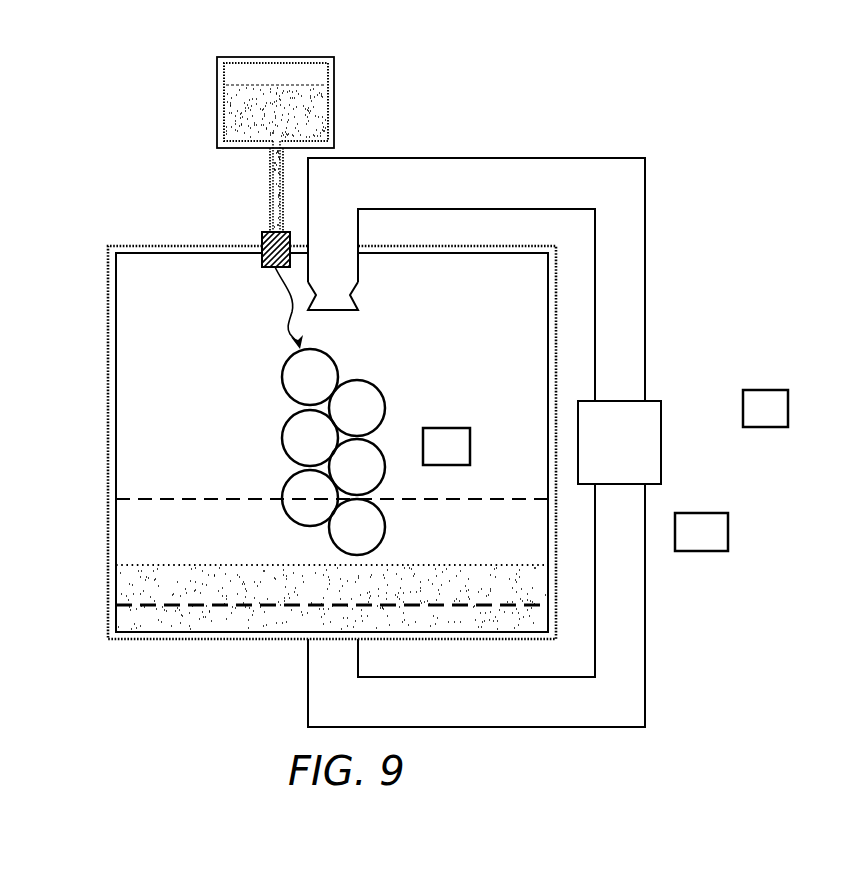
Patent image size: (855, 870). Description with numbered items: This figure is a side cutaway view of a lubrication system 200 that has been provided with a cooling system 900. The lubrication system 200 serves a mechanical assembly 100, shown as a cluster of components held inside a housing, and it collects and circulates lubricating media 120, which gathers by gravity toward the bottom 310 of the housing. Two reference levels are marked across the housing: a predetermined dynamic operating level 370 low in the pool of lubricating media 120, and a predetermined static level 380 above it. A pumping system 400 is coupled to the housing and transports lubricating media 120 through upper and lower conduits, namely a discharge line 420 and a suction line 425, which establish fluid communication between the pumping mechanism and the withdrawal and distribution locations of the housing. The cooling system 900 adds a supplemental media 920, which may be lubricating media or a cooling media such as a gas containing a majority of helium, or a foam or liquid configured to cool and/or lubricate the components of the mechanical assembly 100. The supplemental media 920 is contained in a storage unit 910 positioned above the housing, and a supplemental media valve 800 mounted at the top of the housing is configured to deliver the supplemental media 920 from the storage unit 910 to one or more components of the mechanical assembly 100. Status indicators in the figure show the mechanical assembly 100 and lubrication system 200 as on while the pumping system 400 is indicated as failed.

The mechanical assembly 100 is at (378, 438).
The lubricating media 120 is at (170, 625).
The lubrication system 200 is at (695, 393).
The bottom 310 is at (250, 639).
The predetermined dynamic operating level 370 is at (115, 607).
The predetermined static level 380 is at (108, 499).
The pumping system 400 is at (660, 484).
The discharge line 420 is at (646, 206).
The suction line 425 is at (588, 727).
The supplemental media valve 800 is at (262, 238).
The cooling system 900 is at (290, 125).
The storage unit 910 is at (273, 57).
The supplemental media 920 is at (226, 125).